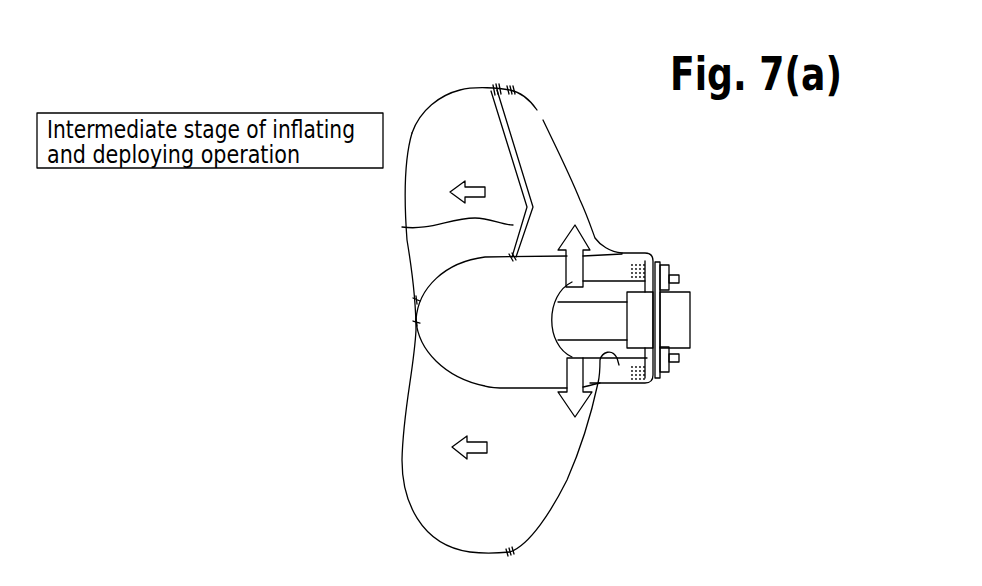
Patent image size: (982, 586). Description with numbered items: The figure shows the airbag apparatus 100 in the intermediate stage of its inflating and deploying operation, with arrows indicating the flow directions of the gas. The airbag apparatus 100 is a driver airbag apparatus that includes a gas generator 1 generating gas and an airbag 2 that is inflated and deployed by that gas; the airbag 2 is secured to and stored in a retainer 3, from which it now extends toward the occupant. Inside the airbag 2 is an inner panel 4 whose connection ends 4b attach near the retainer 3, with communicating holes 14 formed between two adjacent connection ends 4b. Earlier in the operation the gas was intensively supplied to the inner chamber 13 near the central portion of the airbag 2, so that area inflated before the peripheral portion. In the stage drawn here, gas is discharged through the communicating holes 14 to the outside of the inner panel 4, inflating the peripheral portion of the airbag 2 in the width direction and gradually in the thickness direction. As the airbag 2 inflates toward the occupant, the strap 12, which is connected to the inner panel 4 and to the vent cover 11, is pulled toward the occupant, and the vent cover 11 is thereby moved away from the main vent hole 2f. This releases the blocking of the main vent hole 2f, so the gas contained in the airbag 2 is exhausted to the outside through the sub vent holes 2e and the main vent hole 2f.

The gas generator 1 is at (687, 293).
The airbag 2 is at (412, 133).
The sub vent hole 2e is at (585, 207).
The main vent hole 2f is at (542, 107).
The retainer 3 is at (648, 386).
The inner panel 4 is at (427, 322).
The connection end 4b is at (631, 262).
The vent cover 11 is at (517, 141).
The strap 12 is at (402, 227).
The inner chamber 13 is at (432, 366).
The communicating hole 14 is at (619, 362).
The airbag apparatus 100 is at (753, 238).